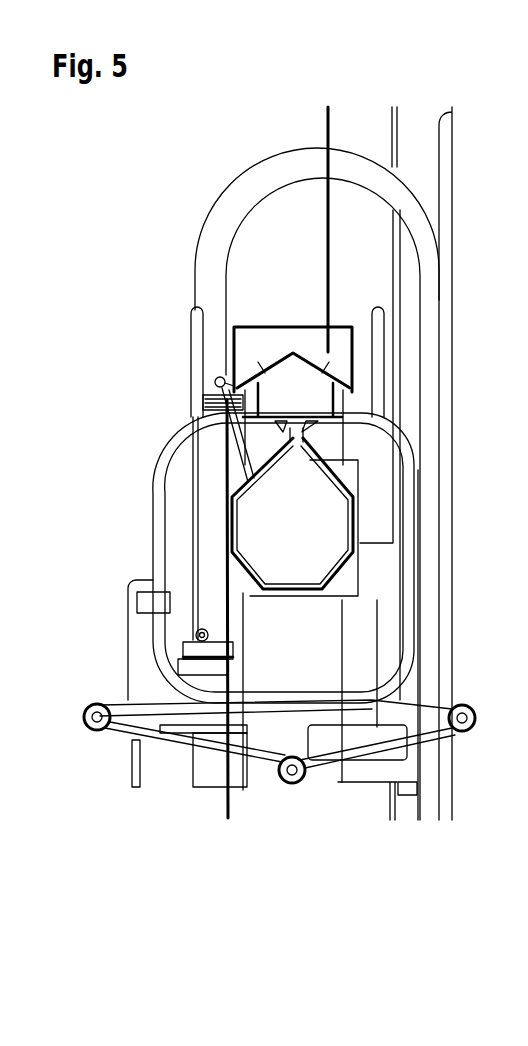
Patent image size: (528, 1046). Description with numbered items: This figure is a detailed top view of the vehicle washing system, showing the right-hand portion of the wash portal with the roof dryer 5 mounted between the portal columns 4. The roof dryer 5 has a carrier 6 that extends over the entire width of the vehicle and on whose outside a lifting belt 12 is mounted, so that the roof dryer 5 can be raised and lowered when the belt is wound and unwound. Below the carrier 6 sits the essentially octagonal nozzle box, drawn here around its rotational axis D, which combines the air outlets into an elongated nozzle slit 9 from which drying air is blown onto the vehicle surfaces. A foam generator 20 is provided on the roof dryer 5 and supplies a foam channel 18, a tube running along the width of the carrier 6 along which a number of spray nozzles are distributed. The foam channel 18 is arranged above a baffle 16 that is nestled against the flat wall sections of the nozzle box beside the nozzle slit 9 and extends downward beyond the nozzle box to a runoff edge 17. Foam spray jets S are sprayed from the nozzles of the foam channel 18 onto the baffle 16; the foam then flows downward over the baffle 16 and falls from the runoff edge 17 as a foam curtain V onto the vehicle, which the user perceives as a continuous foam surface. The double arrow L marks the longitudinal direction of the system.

The portal column 4 is at (448, 141).
The roof dryer 5 is at (167, 325).
The carrier 6 is at (275, 327).
The nozzle slit 9 is at (292, 417).
The lifting belt 12 is at (322, 120).
The baffle 16 is at (240, 593).
The runoff edge 17 is at (245, 600).
The foam channel 18 is at (214, 381).
The foam generator 20 is at (203, 528).
The foam spray jets S is at (233, 474).
The rotational axis of nozzle box D is at (295, 517).
The foam curtain V is at (222, 800).
The longitudinal direction L is at (142, 173).